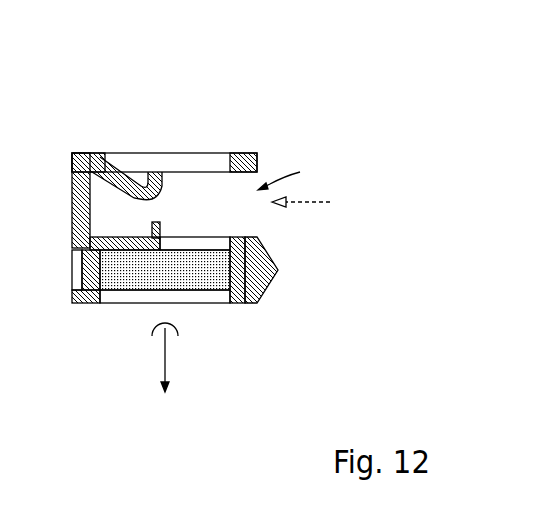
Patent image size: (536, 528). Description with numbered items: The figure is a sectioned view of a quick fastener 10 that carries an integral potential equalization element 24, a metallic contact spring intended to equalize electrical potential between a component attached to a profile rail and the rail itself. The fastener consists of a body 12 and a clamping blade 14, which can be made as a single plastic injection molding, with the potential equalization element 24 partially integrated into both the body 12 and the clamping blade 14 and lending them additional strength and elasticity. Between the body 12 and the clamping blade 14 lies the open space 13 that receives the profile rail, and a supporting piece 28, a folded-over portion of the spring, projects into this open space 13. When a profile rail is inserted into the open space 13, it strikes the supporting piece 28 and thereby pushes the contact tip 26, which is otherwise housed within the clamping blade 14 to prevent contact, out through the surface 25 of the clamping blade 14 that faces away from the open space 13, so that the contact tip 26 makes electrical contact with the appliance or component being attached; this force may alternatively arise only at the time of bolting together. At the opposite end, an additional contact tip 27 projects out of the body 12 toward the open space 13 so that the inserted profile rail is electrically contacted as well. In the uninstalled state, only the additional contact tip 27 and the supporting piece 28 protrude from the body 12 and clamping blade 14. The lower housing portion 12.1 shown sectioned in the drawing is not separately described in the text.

The quick fastener 10 is at (190, 77).
The body 12 is at (85, 303).
The housing body 12.1 is at (207, 277).
The open space 13 is at (294, 181).
The clamping blade 14 is at (242, 152).
The potential equalization element 24 is at (88, 155).
The surface of the clamping blade 25 is at (198, 152).
The contact tip 26 is at (150, 172).
The additional contact tip 27 is at (153, 224).
The supporting piece 28 is at (150, 196).